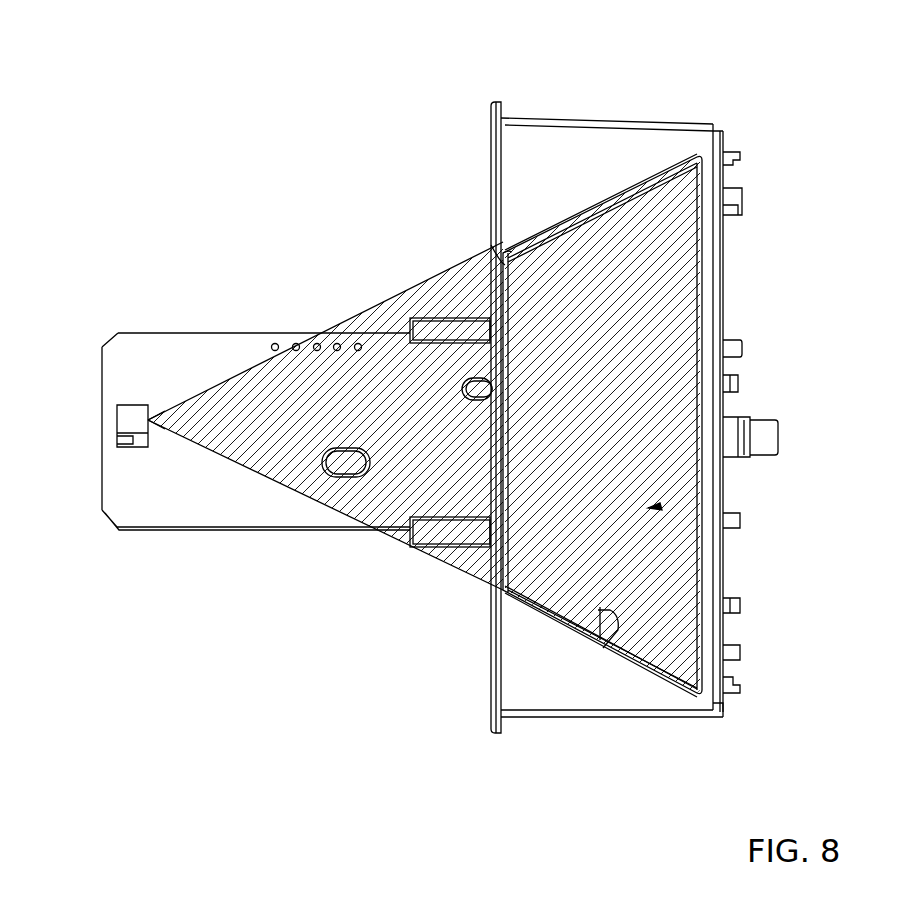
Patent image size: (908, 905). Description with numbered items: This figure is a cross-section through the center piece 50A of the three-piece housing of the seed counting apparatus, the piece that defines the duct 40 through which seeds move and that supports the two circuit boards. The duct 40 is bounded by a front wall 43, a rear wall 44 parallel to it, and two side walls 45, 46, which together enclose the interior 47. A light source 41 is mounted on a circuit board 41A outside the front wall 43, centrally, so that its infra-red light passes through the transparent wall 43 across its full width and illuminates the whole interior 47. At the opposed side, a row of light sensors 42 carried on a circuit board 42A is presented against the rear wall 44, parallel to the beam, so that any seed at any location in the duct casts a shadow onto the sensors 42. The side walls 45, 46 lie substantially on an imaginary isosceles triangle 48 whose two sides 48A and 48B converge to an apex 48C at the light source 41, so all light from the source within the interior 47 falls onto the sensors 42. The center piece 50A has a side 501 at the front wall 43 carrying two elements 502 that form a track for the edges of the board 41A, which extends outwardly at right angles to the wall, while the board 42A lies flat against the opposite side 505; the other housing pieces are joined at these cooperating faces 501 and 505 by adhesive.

The center piece 50A is at (627, 100).
The duct 40 is at (608, 648).
The light source 41 is at (130, 432).
The circuit board 41A is at (153, 340).
The light sensors 42 is at (703, 295).
The circuit board 42A is at (713, 405).
The front wall 43 is at (490, 256).
The rear wall 44 is at (715, 327).
The side wall 45 is at (577, 213).
The side wall 46 is at (552, 623).
The interior 47 is at (660, 495).
The imaginary triangle 48 is at (372, 305).
The side of triangle 48A is at (318, 515).
The side of triangle 48B is at (250, 335).
The apex 48C is at (160, 430).
The side 501 is at (480, 620).
The elements 502 is at (430, 530).
The side 505 is at (703, 565).